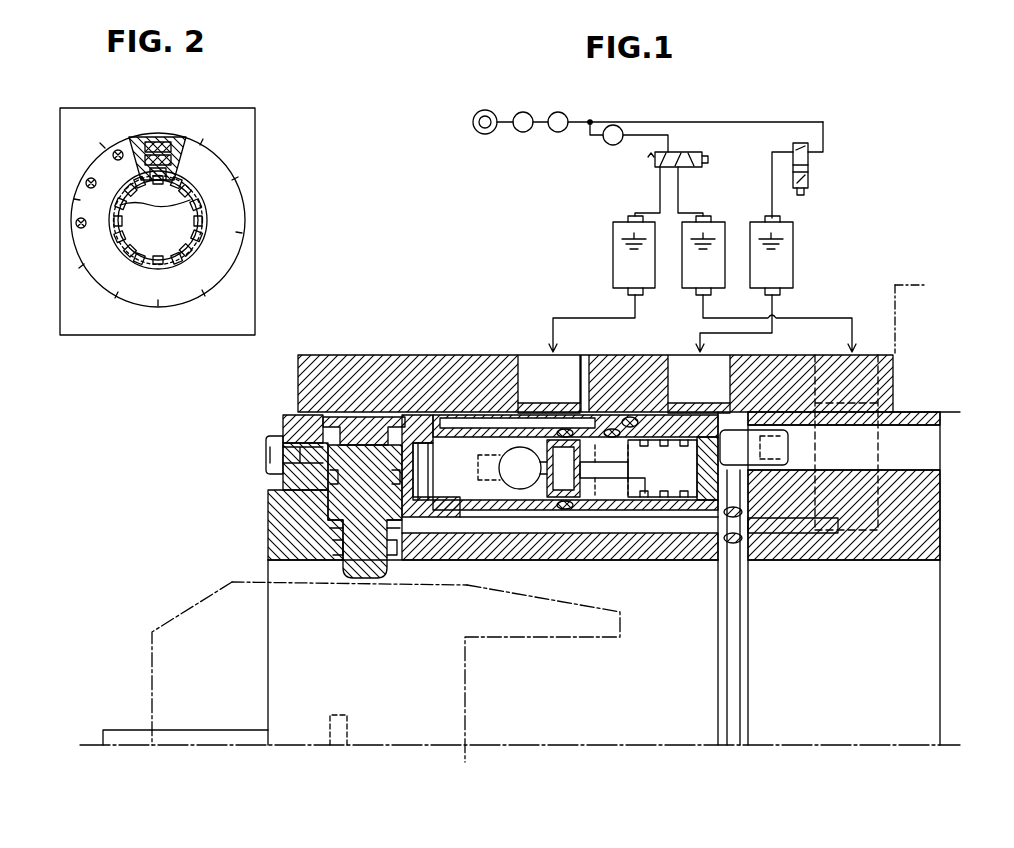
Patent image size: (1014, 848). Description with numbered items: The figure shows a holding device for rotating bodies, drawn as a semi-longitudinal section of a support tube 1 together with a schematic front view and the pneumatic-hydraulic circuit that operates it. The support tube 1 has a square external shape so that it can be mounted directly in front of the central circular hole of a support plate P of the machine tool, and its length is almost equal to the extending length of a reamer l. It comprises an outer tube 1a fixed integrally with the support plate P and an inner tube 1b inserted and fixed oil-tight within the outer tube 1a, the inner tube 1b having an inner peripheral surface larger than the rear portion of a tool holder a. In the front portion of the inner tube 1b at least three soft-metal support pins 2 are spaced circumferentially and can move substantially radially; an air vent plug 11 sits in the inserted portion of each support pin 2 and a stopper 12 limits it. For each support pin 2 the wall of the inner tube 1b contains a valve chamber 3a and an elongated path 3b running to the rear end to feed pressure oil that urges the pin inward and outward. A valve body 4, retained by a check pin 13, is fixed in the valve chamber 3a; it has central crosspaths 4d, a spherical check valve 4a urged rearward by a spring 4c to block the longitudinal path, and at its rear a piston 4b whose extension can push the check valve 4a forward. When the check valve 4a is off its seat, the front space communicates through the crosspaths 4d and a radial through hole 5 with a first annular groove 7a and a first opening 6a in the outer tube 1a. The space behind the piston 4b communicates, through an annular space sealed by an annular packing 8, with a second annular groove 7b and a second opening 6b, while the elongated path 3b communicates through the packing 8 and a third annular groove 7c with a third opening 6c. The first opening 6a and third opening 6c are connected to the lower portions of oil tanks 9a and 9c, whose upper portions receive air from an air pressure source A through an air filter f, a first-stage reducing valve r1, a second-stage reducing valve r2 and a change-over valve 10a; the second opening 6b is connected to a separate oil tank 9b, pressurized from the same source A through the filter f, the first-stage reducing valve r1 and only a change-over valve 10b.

In FIG. 2, the support tube 1 is at (240, 102).
In FIG. 1, the support tube 1 is at (455, 300).
In FIG. 2, the outer tube 1a is at (238, 142).
In FIG. 1, the outer tube 1a is at (395, 360).
In FIG. 2, the inner tube 1b is at (226, 190).
In FIG. 1, the inner tube 1b is at (292, 516).
In FIG. 2, the support pin 2 is at (153, 182).
In FIG. 1, the support pin 2 is at (366, 562).
In FIG. 1, the valve chamber 3a is at (422, 445).
In FIG. 1, the elongated path 3b is at (505, 540).
In FIG. 1, the valve body 4 is at (480, 445).
In FIG. 1, the spherical check valve 4a is at (532, 478).
In FIG. 1, the piston 4b is at (670, 478).
In FIG. 1, the spring 4c is at (478, 520).
In FIG. 1, the crosspaths 4d is at (590, 495).
In FIG. 1, the radial through hole 5 is at (610, 505).
In FIG. 1, the first opening 6a is at (546, 355).
In FIG. 1, the second opening 6b is at (692, 362).
In FIG. 1, the third opening 6c is at (858, 350).
In FIG. 1, the first annular groove 7a is at (588, 410).
In FIG. 1, the second annular groove 7b is at (756, 400).
In FIG. 1, the third annular groove 7c is at (808, 530).
In FIG. 1, the annular packing 8 is at (748, 594).
In FIG. 1, the oil tank 9a is at (614, 262).
In FIG. 1, the oil tank 9b is at (780, 263).
In FIG. 1, the oil tank 9c is at (692, 275).
In FIG. 1, the change-over valve 10a is at (658, 162).
In FIG. 1, the change-over valve 10b is at (812, 173).
In FIG. 1, the air vent plug 11 is at (270, 448).
In FIG. 1, the stopper 12 is at (346, 375).
In FIG. 1, the check pin 13 is at (795, 447).
In FIG. 2, the tool holder a is at (138, 243).
In FIG. 1, the tool holder a is at (443, 663).
In FIG. 1, the support plate P is at (920, 284).
In FIG. 1, the reamer l is at (236, 742).
In FIG. 1, the air pressure source A is at (481, 134).
In FIG. 1, the air filter f is at (521, 132).
In FIG. 1, the first-stage reducing valve r1 is at (556, 132).
In FIG. 1, the second-stage reducing valve r2 is at (606, 144).